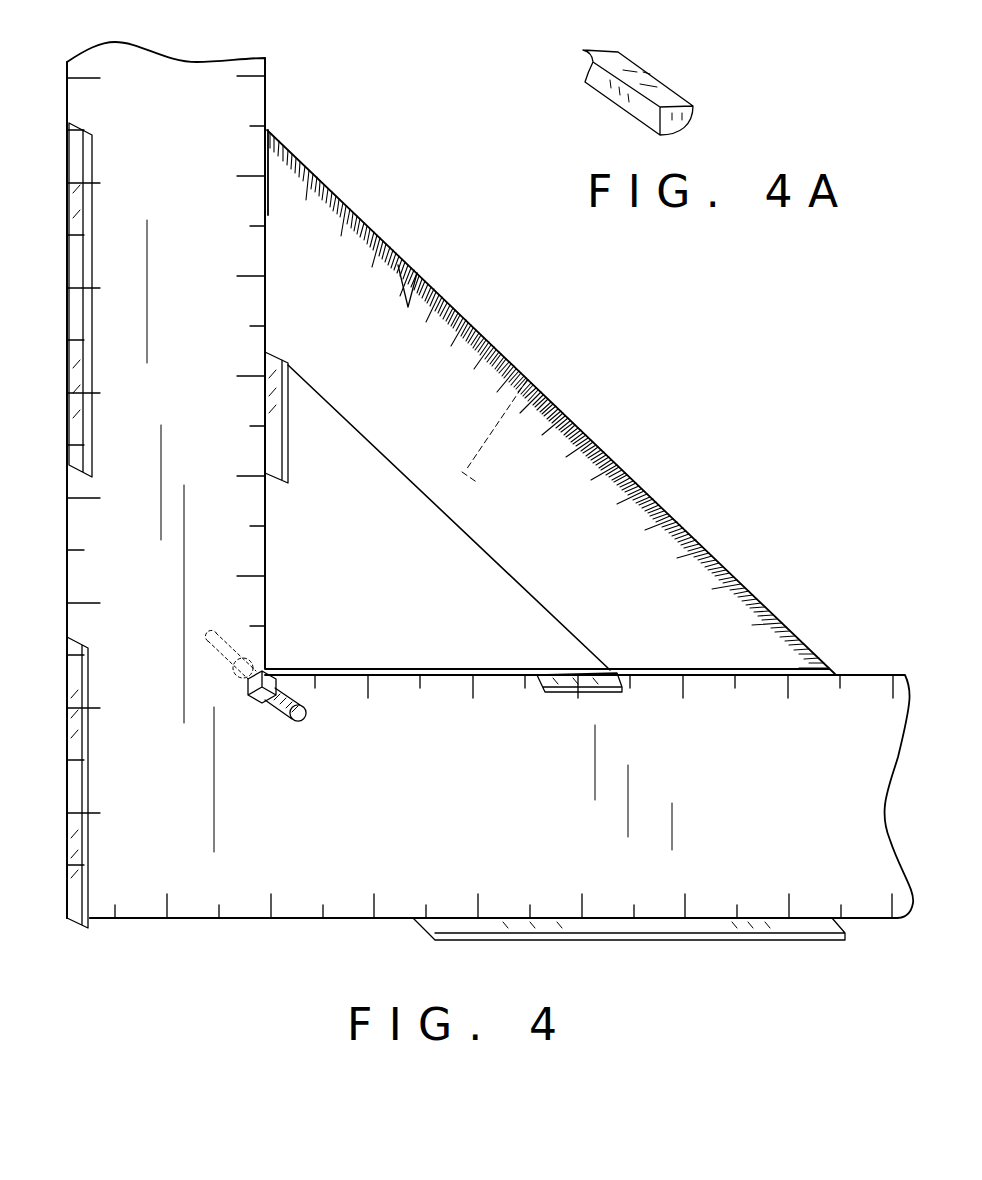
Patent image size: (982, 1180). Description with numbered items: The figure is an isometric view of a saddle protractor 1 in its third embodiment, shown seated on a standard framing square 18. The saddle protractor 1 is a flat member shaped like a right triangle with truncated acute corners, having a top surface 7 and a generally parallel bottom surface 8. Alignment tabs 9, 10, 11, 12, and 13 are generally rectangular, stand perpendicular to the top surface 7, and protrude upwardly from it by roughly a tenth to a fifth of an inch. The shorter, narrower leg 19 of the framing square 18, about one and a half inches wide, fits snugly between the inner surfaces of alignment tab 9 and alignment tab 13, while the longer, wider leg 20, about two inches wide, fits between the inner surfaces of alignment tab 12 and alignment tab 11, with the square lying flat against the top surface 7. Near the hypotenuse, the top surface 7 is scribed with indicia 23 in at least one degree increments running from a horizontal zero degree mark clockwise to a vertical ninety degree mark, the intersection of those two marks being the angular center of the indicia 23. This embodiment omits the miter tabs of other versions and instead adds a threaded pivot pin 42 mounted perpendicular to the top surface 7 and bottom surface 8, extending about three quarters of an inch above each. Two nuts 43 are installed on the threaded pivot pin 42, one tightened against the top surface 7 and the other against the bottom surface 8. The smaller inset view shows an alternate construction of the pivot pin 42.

In FIG. 4, the saddle protractor 1 is at (677, 392).
In FIG. 4, the top surface 7 is at (568, 585).
In FIG. 4, the bottom surface 8 is at (523, 383).
In FIG. 4, the alignment tab 9 is at (80, 217).
In FIG. 4, the alignment tab 10 is at (80, 779).
In FIG. 4, the alignment tab 11 is at (715, 943).
In FIG. 4, the alignment tab 12 is at (575, 675).
In FIG. 4, the alignment tab 13 is at (288, 435).
In FIG. 4, the standard framing square 18 is at (265, 92).
In FIG. 4, the shorter, narrower leg 19 is at (163, 95).
In FIG. 4, the longer, wider leg 20 is at (327, 842).
In FIG. 4, the indicia 23 is at (428, 278).
In FIG. 4, the threaded pivot pin 42 is at (288, 697).
In FIG. 4A, the threaded pivot pin 42 is at (668, 83).
In FIG. 4, the nuts 43 is at (270, 662).